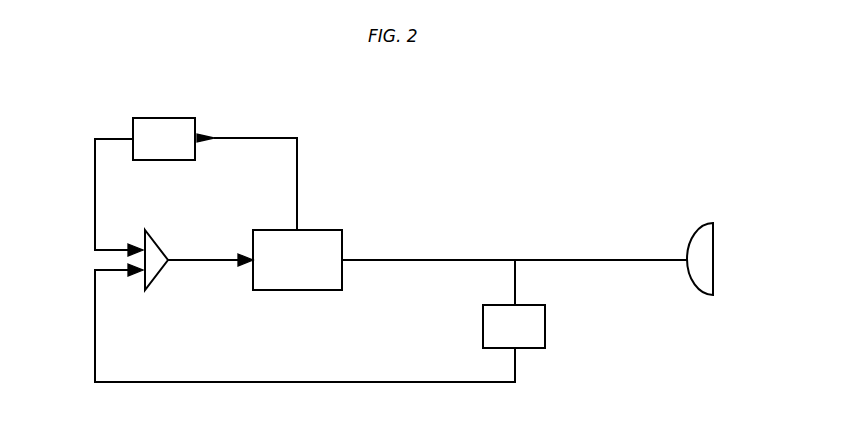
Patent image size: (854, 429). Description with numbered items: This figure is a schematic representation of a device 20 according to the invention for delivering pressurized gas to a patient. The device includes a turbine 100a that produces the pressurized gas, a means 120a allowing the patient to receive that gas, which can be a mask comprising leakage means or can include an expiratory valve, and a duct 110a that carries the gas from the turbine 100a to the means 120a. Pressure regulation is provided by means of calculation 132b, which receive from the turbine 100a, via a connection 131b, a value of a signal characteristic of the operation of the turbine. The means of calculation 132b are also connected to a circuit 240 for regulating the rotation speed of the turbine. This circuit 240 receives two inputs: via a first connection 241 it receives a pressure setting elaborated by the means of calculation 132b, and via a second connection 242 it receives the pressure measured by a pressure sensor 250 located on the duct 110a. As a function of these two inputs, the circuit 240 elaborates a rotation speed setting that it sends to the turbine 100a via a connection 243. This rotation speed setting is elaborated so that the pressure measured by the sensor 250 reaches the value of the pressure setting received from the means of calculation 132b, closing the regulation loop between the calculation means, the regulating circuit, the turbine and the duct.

The device 20 is at (532, 114).
The turbine 100a is at (297, 290).
The duct 110a is at (603, 261).
The means allowing a patient to receive the pressurized gas 120a is at (713, 250).
The connection 131b is at (300, 180).
The means of calculation 132b is at (162, 118).
The circuit for regulating the rotation speed of the turbine 240 is at (160, 275).
The first connection 241 is at (93, 190).
The second connection 242 is at (93, 327).
The connection 243 is at (200, 258).
The pressure sensor 250 is at (483, 330).